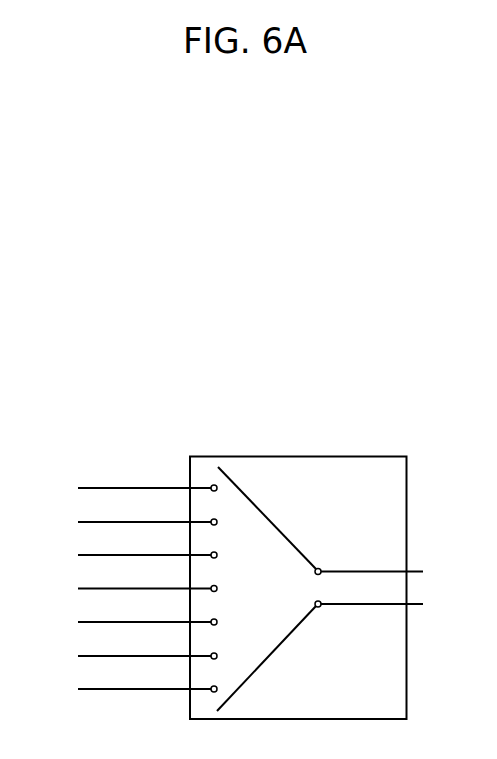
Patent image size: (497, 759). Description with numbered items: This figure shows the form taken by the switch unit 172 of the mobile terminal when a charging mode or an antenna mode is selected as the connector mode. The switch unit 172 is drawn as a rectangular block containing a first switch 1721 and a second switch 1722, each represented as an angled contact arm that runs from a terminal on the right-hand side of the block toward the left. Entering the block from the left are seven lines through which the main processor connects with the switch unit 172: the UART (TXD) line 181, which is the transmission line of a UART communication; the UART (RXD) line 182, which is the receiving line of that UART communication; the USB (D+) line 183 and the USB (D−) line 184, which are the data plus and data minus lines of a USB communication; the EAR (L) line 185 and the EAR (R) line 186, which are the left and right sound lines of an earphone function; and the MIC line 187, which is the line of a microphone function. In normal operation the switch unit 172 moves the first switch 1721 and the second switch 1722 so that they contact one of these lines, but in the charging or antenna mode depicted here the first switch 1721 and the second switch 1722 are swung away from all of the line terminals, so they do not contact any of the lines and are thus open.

The switch unit 172 is at (307, 456).
The first switch 1721 is at (280, 532).
The second switch 1722 is at (280, 645).
The UART (TXD) line 181 is at (78, 488).
The UART (RXD) line 182 is at (78, 522).
The USB (D+) line 183 is at (78, 555).
The USB (D−) line 184 is at (78, 588).
The EAR (L) line 185 is at (78, 622).
The EAR (R) line 186 is at (78, 656).
The MIC line 187 is at (78, 689).